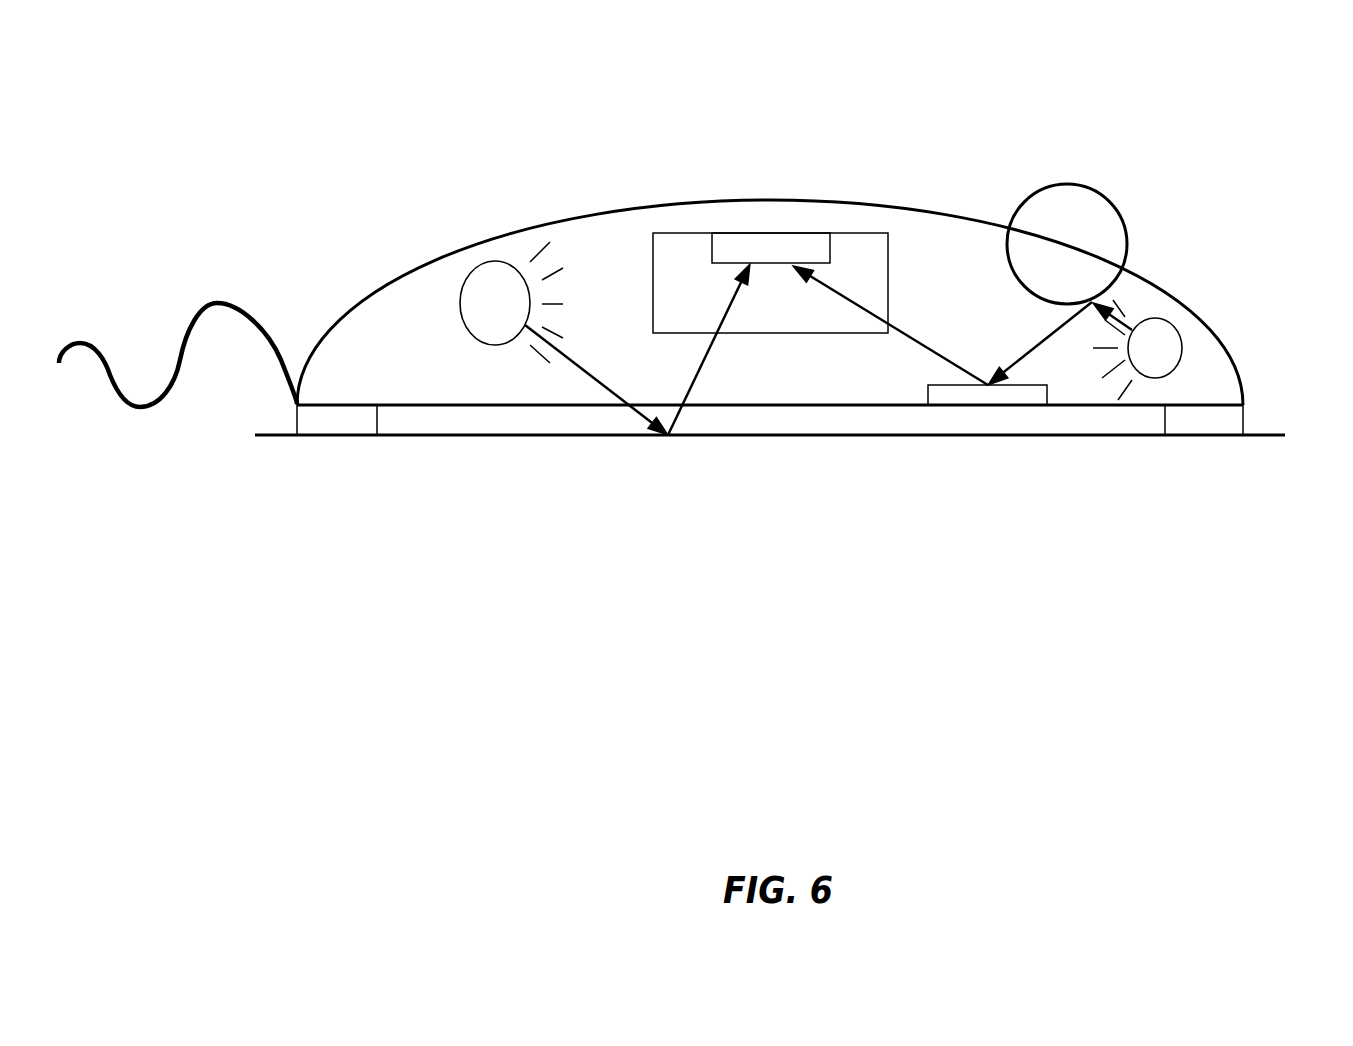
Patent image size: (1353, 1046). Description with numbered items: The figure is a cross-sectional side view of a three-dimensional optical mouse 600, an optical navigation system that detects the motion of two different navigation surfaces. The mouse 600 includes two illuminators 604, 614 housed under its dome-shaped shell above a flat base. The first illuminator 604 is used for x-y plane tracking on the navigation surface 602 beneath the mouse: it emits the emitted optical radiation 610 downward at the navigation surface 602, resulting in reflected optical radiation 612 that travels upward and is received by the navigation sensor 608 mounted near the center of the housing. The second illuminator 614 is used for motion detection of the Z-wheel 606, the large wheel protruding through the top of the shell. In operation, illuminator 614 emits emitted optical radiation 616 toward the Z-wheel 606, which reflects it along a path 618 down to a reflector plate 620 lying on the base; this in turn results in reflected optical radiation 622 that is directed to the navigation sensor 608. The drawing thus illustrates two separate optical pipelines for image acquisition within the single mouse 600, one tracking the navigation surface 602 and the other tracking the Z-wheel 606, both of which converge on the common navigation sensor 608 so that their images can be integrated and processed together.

The 3-D optical mouse 600 is at (933, 95).
The navigation surface 602 is at (1267, 435).
The illuminator 604 is at (485, 288).
The Z-wheel 606 is at (1067, 244).
The navigation sensor 608 is at (772, 247).
The emitted optical radiation 610 is at (600, 387).
The reflected optical radiation 612 is at (707, 363).
The illuminator 614 is at (1125, 272).
The emitted optical radiation 616 is at (1157, 333).
The light beam reflected from scroll wheel 618 is at (1050, 333).
The reflector plate 620 is at (1008, 395).
The reflected optical radiation 622 is at (903, 335).